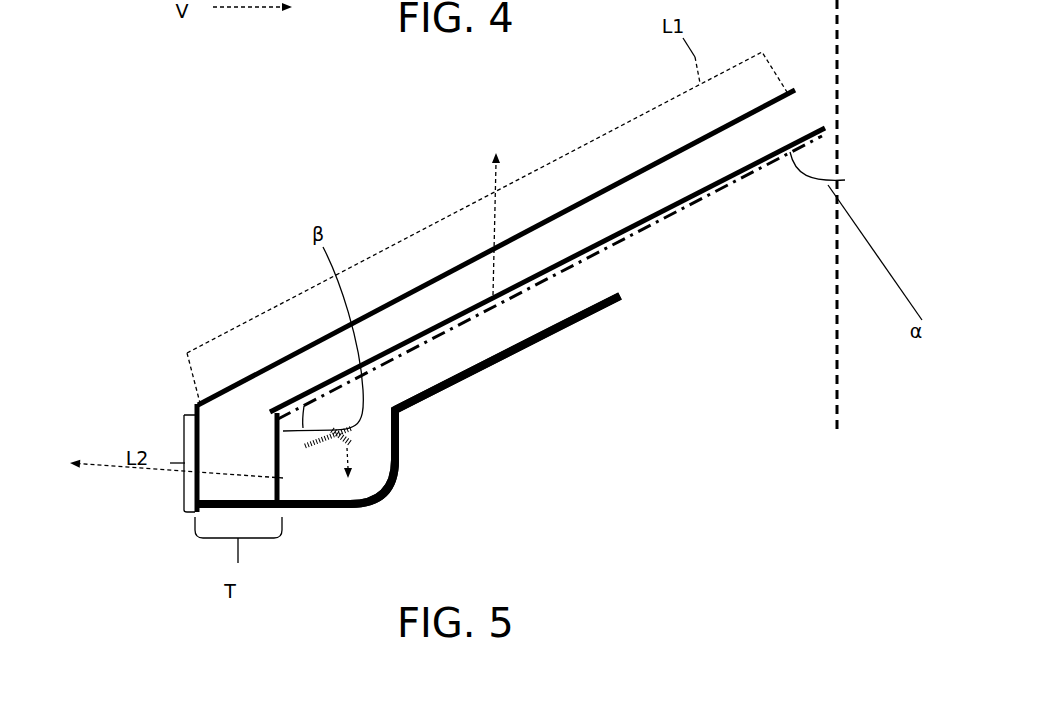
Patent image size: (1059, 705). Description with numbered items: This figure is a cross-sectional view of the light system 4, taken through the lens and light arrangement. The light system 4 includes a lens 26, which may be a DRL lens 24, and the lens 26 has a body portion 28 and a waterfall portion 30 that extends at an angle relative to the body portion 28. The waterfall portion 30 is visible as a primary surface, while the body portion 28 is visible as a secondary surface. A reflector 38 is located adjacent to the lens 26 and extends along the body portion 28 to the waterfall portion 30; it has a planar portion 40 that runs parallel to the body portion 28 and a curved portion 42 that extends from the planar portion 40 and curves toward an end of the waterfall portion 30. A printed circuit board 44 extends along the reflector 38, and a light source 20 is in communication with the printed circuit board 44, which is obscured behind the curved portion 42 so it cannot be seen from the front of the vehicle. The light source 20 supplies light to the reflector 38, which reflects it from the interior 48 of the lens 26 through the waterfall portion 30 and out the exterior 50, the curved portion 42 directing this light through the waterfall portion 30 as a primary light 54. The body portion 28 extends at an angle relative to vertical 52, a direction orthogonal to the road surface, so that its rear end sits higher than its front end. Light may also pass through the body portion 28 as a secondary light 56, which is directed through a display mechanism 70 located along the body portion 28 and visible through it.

The light system 4 is at (240, 248).
The light source 20 is at (350, 448).
The DRL lens 24 is at (637, 192).
The lens 26 is at (268, 358).
The body portion 28 is at (717, 195).
The waterfall portion 30 is at (245, 450).
The reflector 38 is at (622, 297).
The planar portion 40 is at (530, 337).
The curved portion 42 is at (360, 497).
The printed circuit board 44 is at (430, 382).
The interior 48 is at (287, 478).
The exterior 50 is at (130, 427).
The vertical 52 is at (837, 33).
The primary light 54 is at (103, 468).
The secondary light 56 is at (500, 207).
The display mechanism 70 is at (647, 235).